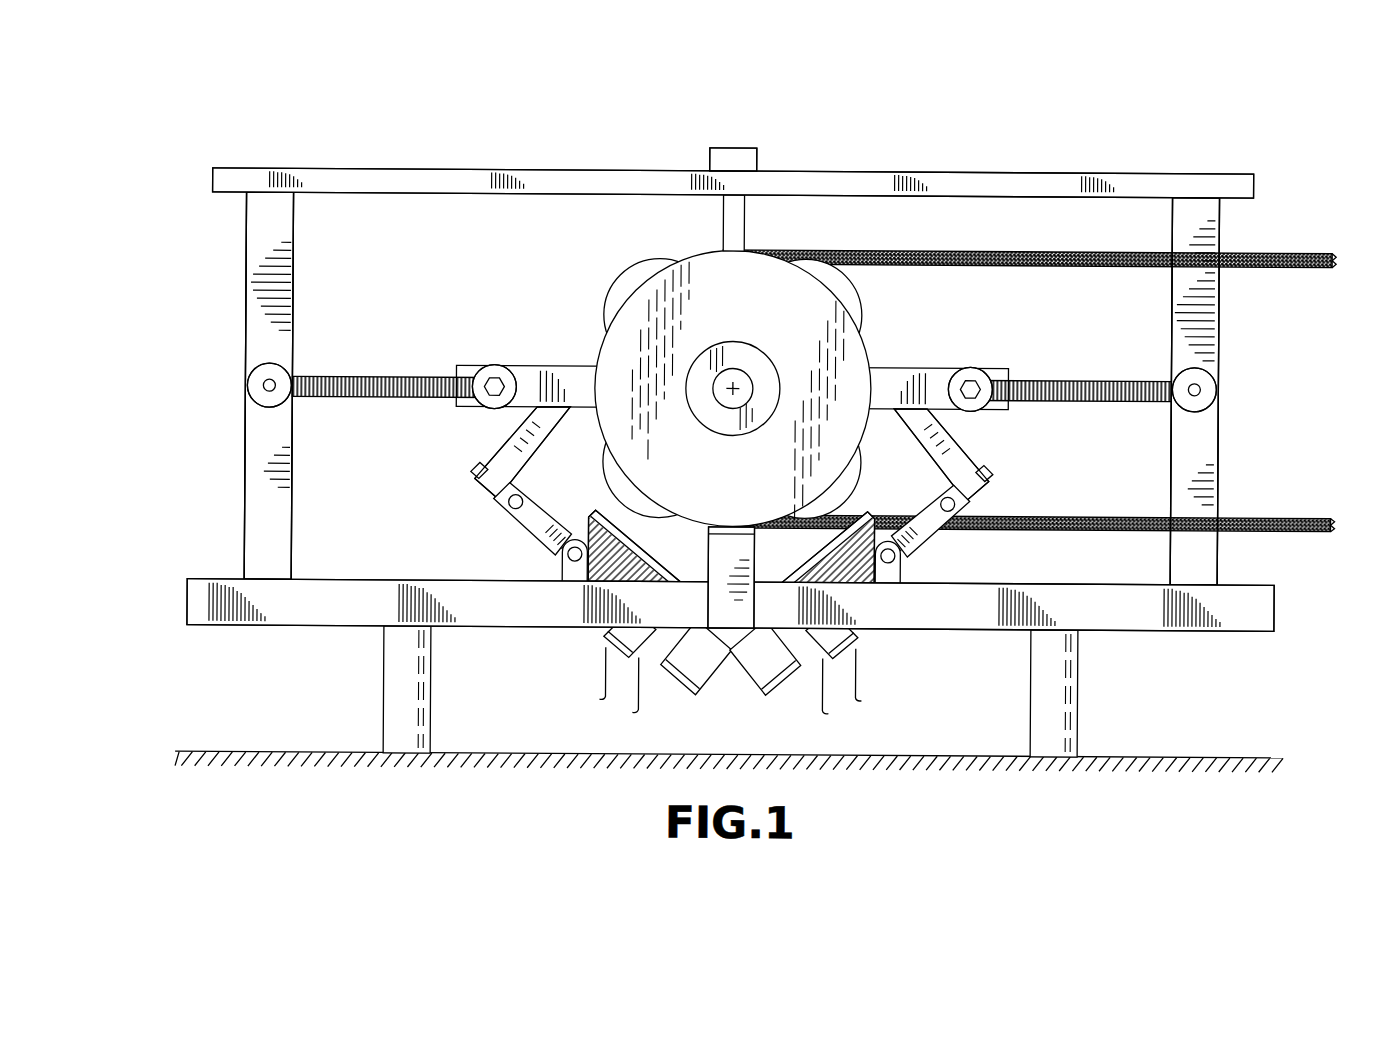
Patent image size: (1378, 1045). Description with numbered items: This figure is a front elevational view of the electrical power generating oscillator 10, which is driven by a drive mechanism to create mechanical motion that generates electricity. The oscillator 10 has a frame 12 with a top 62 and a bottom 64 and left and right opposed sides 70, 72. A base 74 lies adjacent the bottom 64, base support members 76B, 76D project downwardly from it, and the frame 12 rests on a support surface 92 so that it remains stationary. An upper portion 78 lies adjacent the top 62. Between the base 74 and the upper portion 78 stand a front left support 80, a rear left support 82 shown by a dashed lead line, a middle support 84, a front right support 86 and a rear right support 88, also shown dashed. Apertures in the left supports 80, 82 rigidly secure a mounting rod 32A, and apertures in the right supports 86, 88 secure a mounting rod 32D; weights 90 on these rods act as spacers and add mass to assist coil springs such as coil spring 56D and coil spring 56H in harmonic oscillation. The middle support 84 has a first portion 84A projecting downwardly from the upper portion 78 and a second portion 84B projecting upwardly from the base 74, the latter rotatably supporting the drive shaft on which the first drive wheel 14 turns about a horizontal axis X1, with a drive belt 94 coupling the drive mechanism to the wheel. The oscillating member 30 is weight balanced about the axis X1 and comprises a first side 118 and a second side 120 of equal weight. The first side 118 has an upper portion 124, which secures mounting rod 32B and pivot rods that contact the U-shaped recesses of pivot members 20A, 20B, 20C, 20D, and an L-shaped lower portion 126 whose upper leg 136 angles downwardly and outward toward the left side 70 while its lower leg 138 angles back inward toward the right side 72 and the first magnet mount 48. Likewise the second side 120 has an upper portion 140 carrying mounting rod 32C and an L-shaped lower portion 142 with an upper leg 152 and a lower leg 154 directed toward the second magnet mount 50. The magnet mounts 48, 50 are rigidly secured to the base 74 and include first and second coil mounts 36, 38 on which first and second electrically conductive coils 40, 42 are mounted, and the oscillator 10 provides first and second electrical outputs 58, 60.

The electrical power generating oscillator 10 is at (455, 120).
The frame 12 is at (1127, 630).
The first drive wheel 14 is at (635, 313).
The pivot member 20A is at (616, 271).
The pivot member 20B is at (862, 290).
The pivot member 20C is at (864, 486).
The pivot member 20D is at (602, 482).
The oscillating member 30 is at (553, 357).
The mounting rod 32A is at (268, 385).
The mounting rod 32B is at (494, 380).
The mounting rod 32C is at (967, 380).
The mounting rod 32D is at (1196, 384).
The first coil mount 36 is at (648, 548).
The second coil mount 38 is at (818, 548).
The first electrically conductive coil 40 is at (650, 556).
The second electrically conductive coil 42 is at (817, 556).
The first magnet mount 48 is at (548, 565).
The second magnet mount 50 is at (918, 577).
The coil spring 56D is at (340, 380).
The coil spring 56H is at (1100, 379).
The first electrical output 58 is at (640, 710).
The second electrical output 60 is at (824, 710).
The top 62 is at (677, 118).
The bottom 64 is at (547, 668).
The left side 70 is at (146, 226).
The right side 72 is at (1322, 212).
The base 74 is at (353, 583).
The second base support member 76B is at (392, 697).
The fourth base support member 76D is at (1043, 697).
The upper portion 78 is at (583, 182).
The front left support 80 is at (260, 429).
The rear left support 82 is at (258, 458).
The middle support 84 is at (712, 597).
The first portion 84A is at (722, 226).
The second portion 84B is at (733, 533).
The front right support 86 is at (1205, 452).
The rear right support 88 is at (1205, 322).
The weights 90 is at (247, 390).
The support surface 92 is at (1192, 754).
The drive belt 94 is at (1072, 250).
The first side 118 is at (470, 401).
The upper portion 124 is at (533, 363).
The second side 120 is at (980, 404).
The upper portion 140 is at (912, 366).
The L-shaped lower portion 126 is at (478, 490).
The upper leg 136 is at (546, 424).
The lower leg 138 is at (527, 520).
The L-shaped lower portion 142 is at (988, 493).
The upper leg 152 is at (918, 424).
The lower leg 154 is at (925, 536).
The horizontal axially extending axis X1 is at (733, 388).